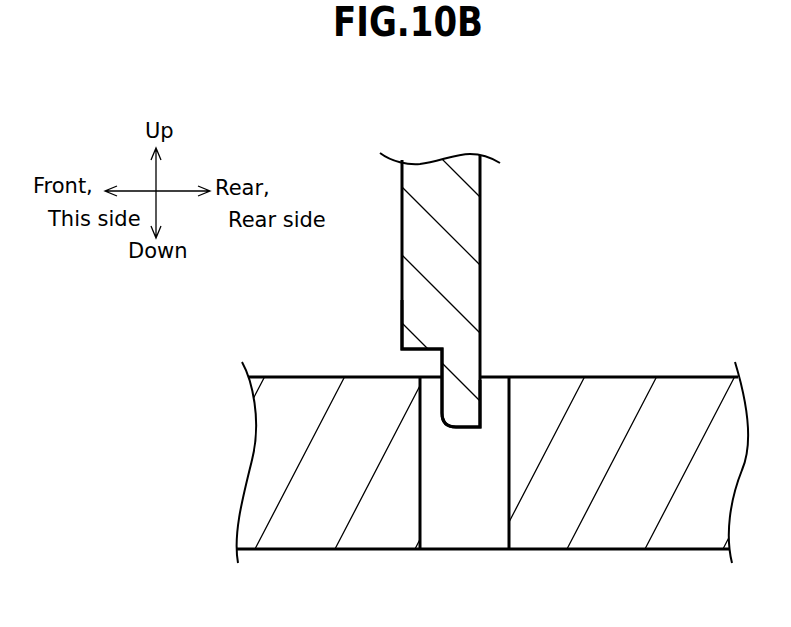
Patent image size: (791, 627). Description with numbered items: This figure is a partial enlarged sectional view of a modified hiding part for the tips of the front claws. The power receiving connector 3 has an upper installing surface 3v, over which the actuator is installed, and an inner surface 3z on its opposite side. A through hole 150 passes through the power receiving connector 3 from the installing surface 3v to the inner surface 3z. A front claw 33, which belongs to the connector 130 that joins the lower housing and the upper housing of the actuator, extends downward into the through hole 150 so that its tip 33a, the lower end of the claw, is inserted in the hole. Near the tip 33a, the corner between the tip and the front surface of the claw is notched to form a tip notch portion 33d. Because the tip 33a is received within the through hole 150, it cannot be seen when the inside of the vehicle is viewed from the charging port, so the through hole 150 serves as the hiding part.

The front claw 33 is at (487, 278).
The connector 130 is at (524, 291).
The tip notch portion 33d is at (402, 350).
The tip 33a is at (465, 435).
The power receiving connector 3 is at (483, 445).
The installing surface 3v is at (616, 366).
The inner surface 3z is at (602, 550).
The through hole 150 is at (420, 502).